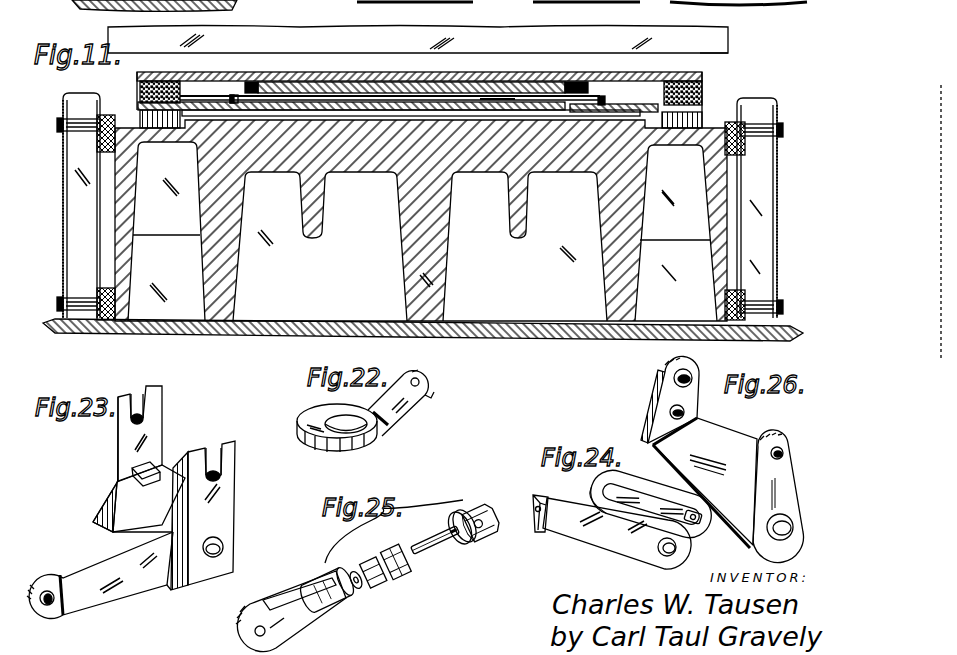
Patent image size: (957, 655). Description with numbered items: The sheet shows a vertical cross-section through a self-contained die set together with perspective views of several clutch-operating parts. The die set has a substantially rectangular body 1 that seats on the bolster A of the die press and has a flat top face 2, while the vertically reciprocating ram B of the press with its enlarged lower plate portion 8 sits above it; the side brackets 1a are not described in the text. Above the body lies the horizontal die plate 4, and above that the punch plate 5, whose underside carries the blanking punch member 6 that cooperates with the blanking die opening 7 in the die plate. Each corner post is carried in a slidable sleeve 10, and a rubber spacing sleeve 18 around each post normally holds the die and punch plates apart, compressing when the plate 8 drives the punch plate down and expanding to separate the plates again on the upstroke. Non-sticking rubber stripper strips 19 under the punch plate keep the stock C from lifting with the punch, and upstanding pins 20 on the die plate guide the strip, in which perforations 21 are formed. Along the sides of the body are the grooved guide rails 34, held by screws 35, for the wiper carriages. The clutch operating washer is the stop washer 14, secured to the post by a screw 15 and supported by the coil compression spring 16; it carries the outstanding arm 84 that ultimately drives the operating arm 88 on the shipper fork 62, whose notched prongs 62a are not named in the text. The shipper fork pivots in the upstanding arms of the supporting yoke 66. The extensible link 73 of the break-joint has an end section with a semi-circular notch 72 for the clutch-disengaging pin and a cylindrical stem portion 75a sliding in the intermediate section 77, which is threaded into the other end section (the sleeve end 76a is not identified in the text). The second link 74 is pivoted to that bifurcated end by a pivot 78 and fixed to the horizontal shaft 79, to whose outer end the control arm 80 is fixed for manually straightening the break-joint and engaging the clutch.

In FIG. 11, the body 1 is at (713, 184).
In FIG. 11, the side bracket 1a is at (63, 172).
In FIG. 11, the flat top face 2 is at (315, 115).
In FIG. 11, the die plate 4 is at (228, 96).
In FIG. 11, the punch plate 5 is at (354, 74).
In FIG. 11, the blanking punch member 6 is at (410, 82).
In FIG. 11, the blanking die opening 7 is at (558, 112).
In FIG. 11, the enlarged lower plate portion 8 is at (712, 57).
In FIG. 11, the sleeve 10 is at (177, 120).
In FIG. 11, the rubber spacing sleeve 18 is at (163, 74).
In FIG. 11, the rubber stripper strip 19 is at (584, 81).
In FIG. 11, the upstanding pin 20 is at (244, 80).
In FIG. 11, the perforation 21 is at (478, 98).
In FIG. 11, the guide rail 34 is at (108, 117).
In FIG. 11, the screw 35 is at (116, 140).
In FIG. 11, the bolster A is at (527, 333).
In FIG. 11, the ram B is at (728, 40).
In FIG. 11, the stock C is at (540, 99).
In FIG. 22, the stop washer 14 is at (312, 418).
In FIG. 22, the outstanding arm 84 is at (422, 409).
In FIG. 23, the shipper fork 62 is at (223, 508).
In FIG. 23, the notch 62a is at (213, 450).
In FIG. 23, the operating arm 88 is at (53, 610).
In FIG. 25, the screw 15 is at (470, 540).
In FIG. 25, the coil compression spring 16 is at (287, 628).
In FIG. 25, the semi-circular notch 72 is at (497, 522).
In FIG. 25, the extensible link 73 is at (433, 603).
In FIG. 25, the cylindrical stem portion 75a is at (447, 551).
In FIG. 25, the sleeve 76a is at (335, 604).
In FIG. 25, the intermediate section 77 is at (380, 586).
In FIG. 24, the link 74 is at (642, 497).
In FIG. 24, the pivot 78 is at (705, 523).
In FIG. 24, the horizontal shaft 79 is at (677, 547).
In FIG. 24, the control arm 80 is at (597, 543).
In FIG. 26, the supporting yoke 66 is at (713, 444).